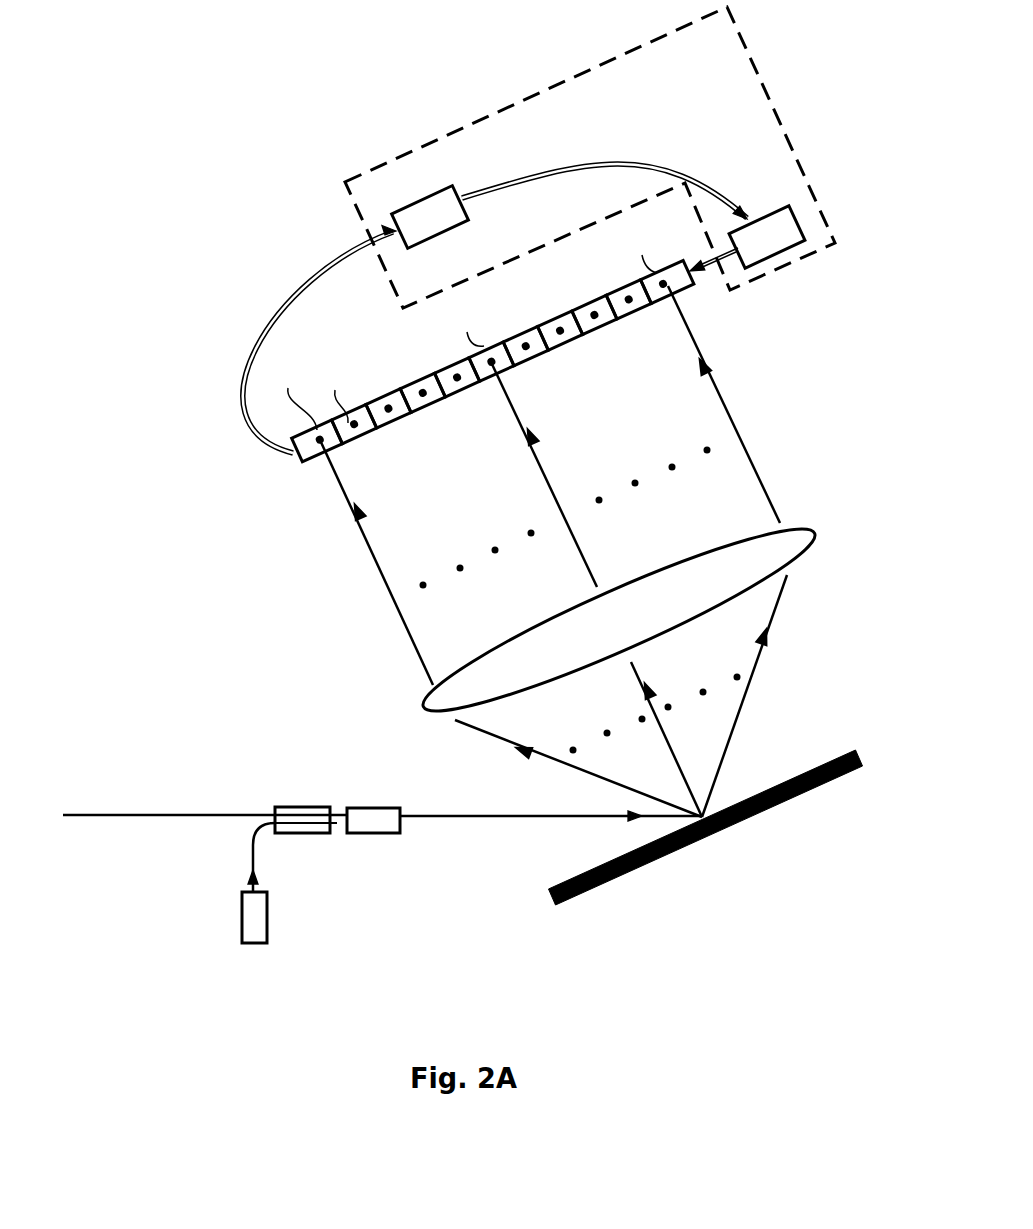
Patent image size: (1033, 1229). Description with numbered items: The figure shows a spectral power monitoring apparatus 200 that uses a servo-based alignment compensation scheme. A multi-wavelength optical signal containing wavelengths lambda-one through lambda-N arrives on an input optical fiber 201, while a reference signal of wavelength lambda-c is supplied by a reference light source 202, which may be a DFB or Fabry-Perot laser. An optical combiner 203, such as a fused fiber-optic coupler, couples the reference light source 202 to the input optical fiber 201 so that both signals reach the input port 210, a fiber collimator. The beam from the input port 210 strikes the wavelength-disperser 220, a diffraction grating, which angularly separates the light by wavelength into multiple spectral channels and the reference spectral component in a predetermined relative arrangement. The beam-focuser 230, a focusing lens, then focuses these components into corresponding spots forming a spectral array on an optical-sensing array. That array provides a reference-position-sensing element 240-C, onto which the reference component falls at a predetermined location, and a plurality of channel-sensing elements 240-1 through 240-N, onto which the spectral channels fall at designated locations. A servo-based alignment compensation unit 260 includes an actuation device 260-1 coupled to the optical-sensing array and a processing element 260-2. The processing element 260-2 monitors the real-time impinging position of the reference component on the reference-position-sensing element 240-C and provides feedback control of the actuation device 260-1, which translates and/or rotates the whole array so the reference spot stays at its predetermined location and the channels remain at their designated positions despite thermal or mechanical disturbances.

The spectral power monitoring apparatus 200 is at (166, 118).
The input optical fiber 201 is at (125, 813).
The reference light source 202 is at (253, 945).
The optical combiner 203 is at (303, 805).
The input port 210 is at (380, 807).
The wavelength-disperser 220 is at (817, 790).
The beam-focuser 230 is at (797, 523).
The reference-position-sensing element 240-C is at (317, 463).
The channel-sensing element 240-1 is at (363, 442).
The channel-sensing element 240-N is at (653, 302).
The servo-based alignment compensation unit 260 is at (755, 63).
The actuation device 260-1 is at (773, 207).
The processing element 260-2 is at (438, 185).